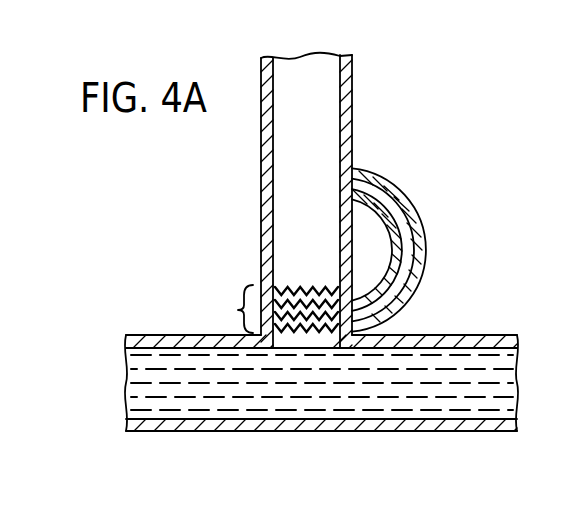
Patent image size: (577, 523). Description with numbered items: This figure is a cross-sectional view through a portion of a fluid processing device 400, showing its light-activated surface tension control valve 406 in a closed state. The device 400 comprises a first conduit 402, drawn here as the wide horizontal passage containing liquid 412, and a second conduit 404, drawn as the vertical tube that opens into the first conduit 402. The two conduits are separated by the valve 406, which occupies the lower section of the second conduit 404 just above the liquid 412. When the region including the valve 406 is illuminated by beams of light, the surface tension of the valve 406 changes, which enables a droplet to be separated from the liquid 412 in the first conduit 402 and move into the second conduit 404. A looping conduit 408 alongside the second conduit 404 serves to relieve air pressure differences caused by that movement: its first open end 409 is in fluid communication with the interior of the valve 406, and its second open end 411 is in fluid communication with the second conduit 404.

The fluid processing device 400 is at (452, 188).
The first conduit 402 is at (447, 412).
The second conduit 404 is at (343, 117).
The light-activated surface tension control valve 406 is at (222, 309).
The conduit 408 is at (417, 277).
The first open end 409 is at (322, 292).
The second open end 411 is at (340, 177).
The liquid 412 is at (132, 390).